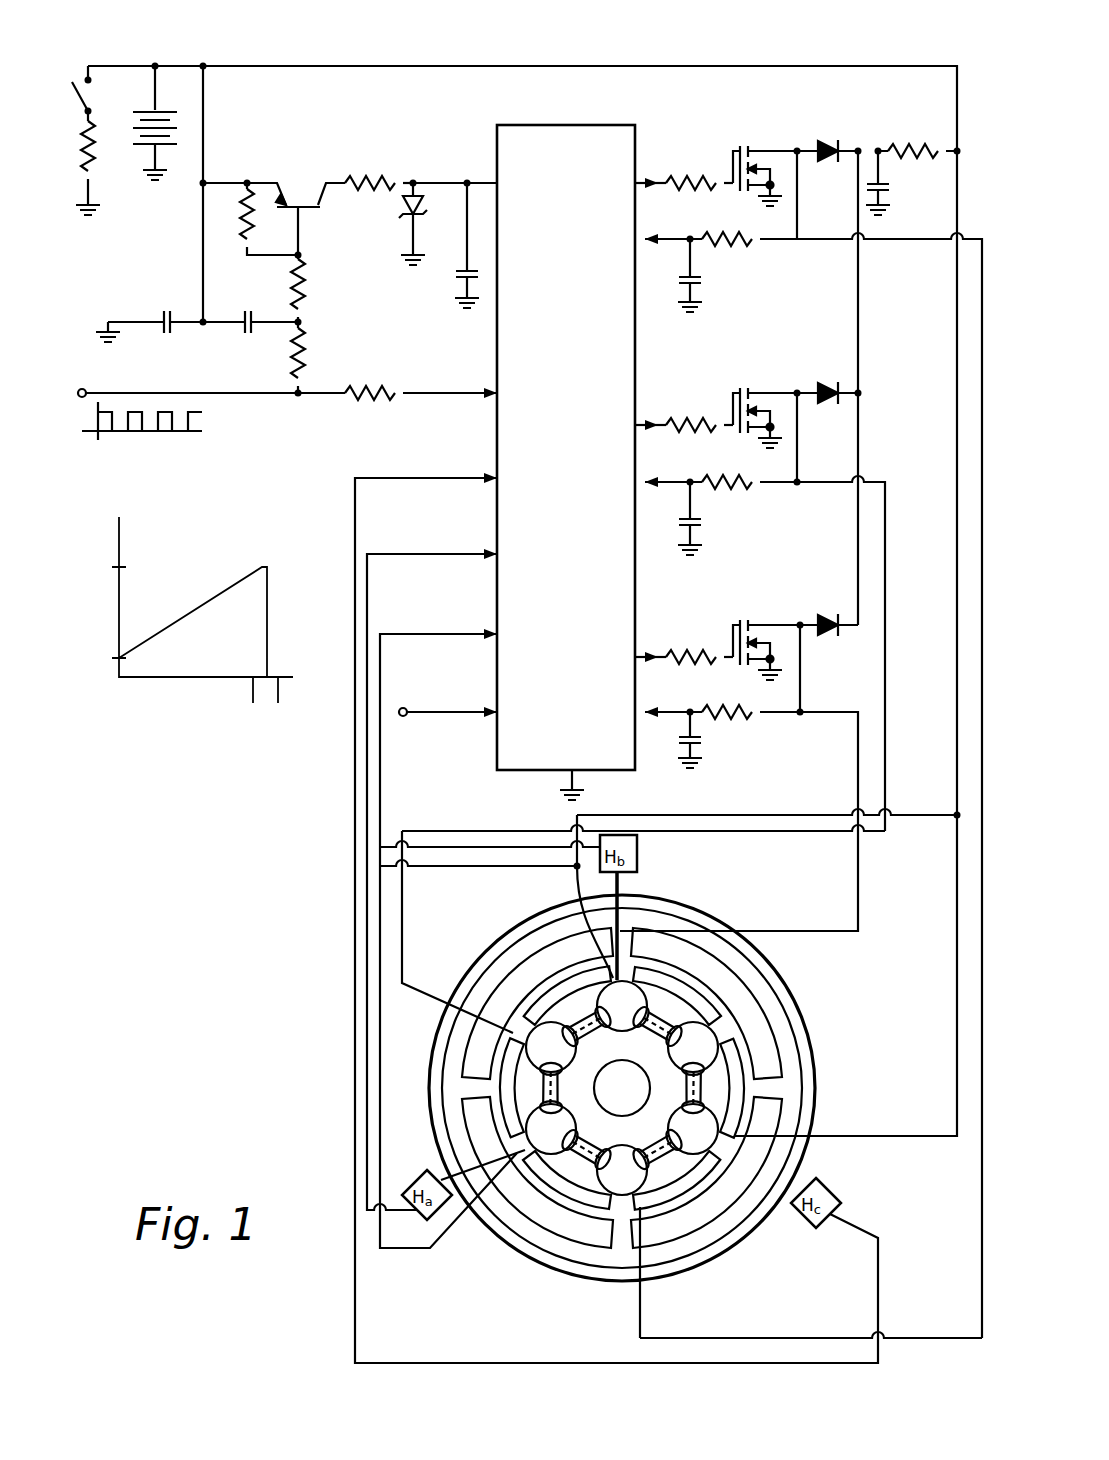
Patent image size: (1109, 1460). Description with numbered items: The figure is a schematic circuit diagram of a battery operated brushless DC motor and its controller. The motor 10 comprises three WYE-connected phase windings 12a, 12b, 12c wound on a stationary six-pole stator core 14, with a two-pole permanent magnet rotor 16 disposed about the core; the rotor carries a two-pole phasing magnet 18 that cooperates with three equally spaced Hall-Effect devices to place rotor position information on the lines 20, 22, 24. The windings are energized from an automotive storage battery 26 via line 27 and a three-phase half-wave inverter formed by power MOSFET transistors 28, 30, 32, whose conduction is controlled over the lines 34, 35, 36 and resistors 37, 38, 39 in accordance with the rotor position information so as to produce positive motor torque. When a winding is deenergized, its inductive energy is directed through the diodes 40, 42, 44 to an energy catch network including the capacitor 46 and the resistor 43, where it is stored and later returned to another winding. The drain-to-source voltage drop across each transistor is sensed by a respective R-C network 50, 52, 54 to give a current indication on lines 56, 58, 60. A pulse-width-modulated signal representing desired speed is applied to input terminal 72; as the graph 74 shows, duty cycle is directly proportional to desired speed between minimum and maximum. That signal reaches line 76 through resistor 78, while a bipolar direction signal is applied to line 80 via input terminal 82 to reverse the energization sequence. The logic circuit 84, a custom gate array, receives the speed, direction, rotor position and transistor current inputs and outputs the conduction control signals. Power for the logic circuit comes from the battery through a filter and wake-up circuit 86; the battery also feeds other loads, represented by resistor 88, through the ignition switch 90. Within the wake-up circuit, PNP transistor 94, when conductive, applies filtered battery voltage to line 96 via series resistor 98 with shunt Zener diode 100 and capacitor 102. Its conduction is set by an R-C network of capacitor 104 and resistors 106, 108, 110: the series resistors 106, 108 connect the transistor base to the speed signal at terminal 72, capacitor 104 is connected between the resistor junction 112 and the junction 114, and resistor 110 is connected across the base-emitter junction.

The brushless DC motor 10 is at (543, 852).
The phase winding 12a is at (679, 995).
The phase winding 12b is at (666, 1188).
The phase winding 12c is at (500, 1069).
The stator core 14 is at (568, 976).
The permanent magnet rotor 16 is at (780, 1023).
The phasing magnet 18 is at (812, 1095).
The rotor position line 20 is at (453, 557).
The rotor position line 22 is at (416, 638).
The rotor position line 24 is at (445, 478).
The automotive storage battery 26 is at (145, 150).
The line 27 is at (535, 66).
The power MOSFET transistor 28 is at (734, 635).
The power MOSFET transistor 30 is at (730, 148).
The power MOSFET transistor 32 is at (726, 392).
The conduction control line 34 is at (657, 654).
The conduction control line 35 is at (655, 173).
The conduction control line 36 is at (655, 422).
The resistor 37 is at (703, 655).
The resistor 38 is at (701, 182).
The resistor 39 is at (701, 424).
The diode 40 is at (828, 623).
The diode 42 is at (824, 148).
The snubber resistor 43 is at (915, 147).
The diode 44 is at (825, 392).
The capacitor 46 is at (890, 188).
The R-C network 50 is at (733, 727).
The R-C network 52 is at (736, 254).
The R-C network 54 is at (728, 495).
The transistor current line 56 is at (673, 720).
The transistor current line 58 is at (668, 239).
The transistor current line 60 is at (670, 482).
The input terminal 72 is at (93, 390).
The graph 74 is at (192, 607).
The line 76 is at (445, 400).
The resistor 78 is at (365, 400).
The line 80 is at (480, 717).
The input terminal 82 is at (162, 315).
The logic circuit 84 is at (566, 462).
The filter and wake-up circuit 86 is at (328, 133).
The resistor 88 is at (85, 160).
The ignition switch 90 is at (82, 105).
The PNP transistor 94 is at (286, 190).
The line 96 is at (480, 183).
The series resistor 98 is at (375, 183).
The shunt Zener diode 100 is at (405, 215).
The capacitor 102 is at (462, 275).
The capacitor 104 is at (235, 314).
The series resistor 106 is at (302, 291).
The series resistor 108 is at (303, 351).
The resistor 110 is at (246, 217).
The resistor junction 112 is at (294, 326).
The junction 114 is at (208, 175).